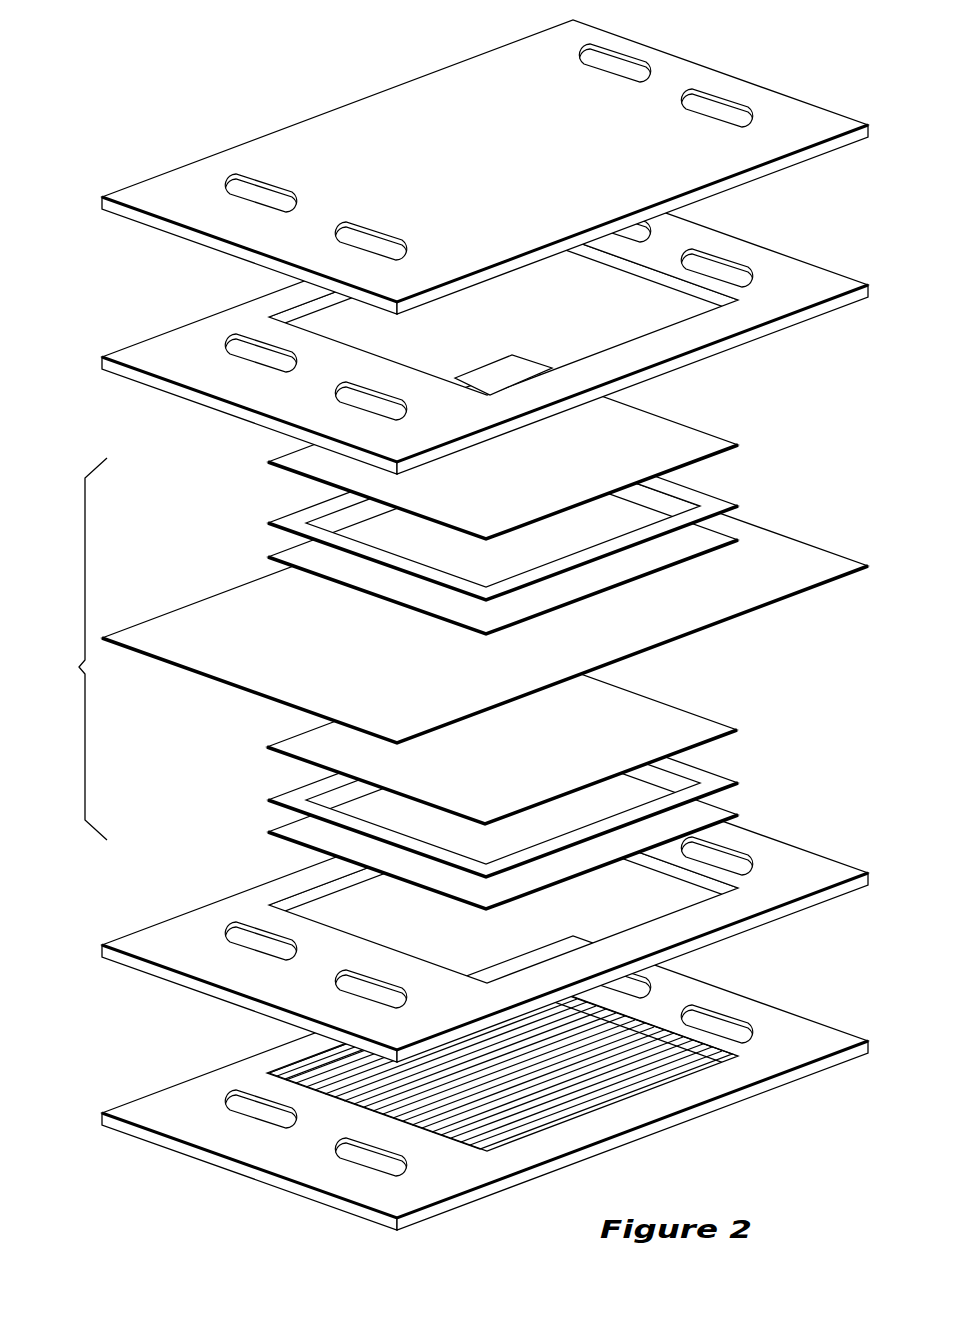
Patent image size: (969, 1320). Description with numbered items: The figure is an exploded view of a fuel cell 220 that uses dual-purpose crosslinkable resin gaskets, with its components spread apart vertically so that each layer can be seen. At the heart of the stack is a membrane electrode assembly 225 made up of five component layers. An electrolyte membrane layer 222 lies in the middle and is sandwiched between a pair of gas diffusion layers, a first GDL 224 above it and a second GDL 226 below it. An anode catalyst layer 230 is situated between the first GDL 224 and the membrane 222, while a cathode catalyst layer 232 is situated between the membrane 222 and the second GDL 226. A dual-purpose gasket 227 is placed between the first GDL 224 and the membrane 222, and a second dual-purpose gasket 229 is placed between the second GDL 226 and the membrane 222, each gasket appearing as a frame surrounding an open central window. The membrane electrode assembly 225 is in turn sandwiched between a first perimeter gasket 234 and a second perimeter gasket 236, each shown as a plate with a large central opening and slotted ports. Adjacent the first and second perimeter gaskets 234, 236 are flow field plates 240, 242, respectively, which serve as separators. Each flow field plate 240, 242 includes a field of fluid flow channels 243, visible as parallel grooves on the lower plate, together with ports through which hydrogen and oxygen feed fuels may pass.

The fuel cell 220 is at (322, 74).
The electrolyte membrane layer 222 is at (790, 555).
The first GDL 224 is at (698, 445).
The membrane electrode assembly 225 is at (71, 649).
The second GDL 226 is at (700, 817).
The dual-purpose gasket 227 is at (690, 498).
The dual-purpose gasket 229 is at (693, 775).
The anode catalyst layer 230 is at (700, 537).
The cathode catalyst layer 232 is at (695, 727).
The first perimeter gasket 234 is at (795, 283).
The second perimeter gasket 236 is at (795, 873).
The flow field plate 240 is at (793, 120).
The flow field plate 242 is at (489, 1083).
The fluid flow channels 243 is at (643, 1073).